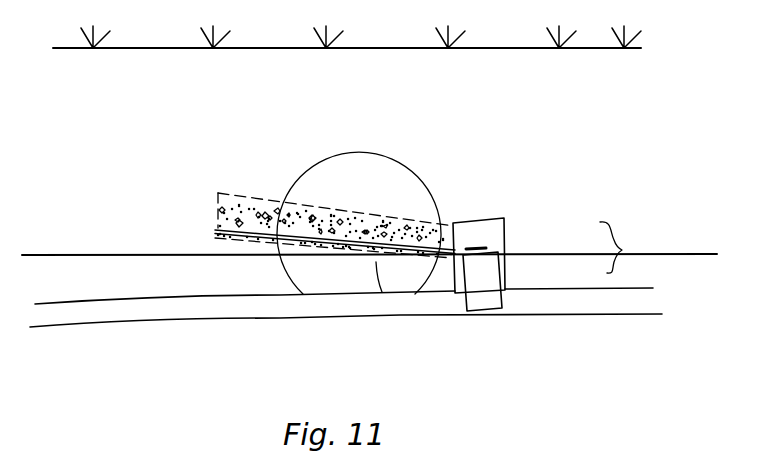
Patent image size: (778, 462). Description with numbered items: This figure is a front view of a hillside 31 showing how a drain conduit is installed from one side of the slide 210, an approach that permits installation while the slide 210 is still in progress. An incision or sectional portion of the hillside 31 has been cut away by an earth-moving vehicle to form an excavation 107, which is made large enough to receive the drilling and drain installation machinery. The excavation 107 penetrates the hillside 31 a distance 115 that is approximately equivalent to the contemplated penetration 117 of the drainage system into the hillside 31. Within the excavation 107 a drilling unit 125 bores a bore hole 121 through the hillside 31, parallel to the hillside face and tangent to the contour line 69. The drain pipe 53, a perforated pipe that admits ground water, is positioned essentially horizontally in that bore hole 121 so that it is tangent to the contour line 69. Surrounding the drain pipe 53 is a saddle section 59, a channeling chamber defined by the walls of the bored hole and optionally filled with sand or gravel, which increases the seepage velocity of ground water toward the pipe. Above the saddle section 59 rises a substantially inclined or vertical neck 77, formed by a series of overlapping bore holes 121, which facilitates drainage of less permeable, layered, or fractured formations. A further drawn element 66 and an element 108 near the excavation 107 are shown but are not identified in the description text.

The hillside 31 is at (589, 193).
The drain pipe 53 is at (405, 243).
The saddle section 59 is at (252, 245).
The subgrade 66 is at (507, 317).
The contour line 69 is at (98, 256).
The neck 77 is at (218, 207).
The excavation 107 is at (505, 231).
The block 108 is at (505, 264).
The distance 115 is at (630, 247).
The penetration 117 is at (385, 258).
The bore hole 121 is at (216, 232).
The drilling unit 125 is at (475, 298).
The slide 210 is at (405, 181).